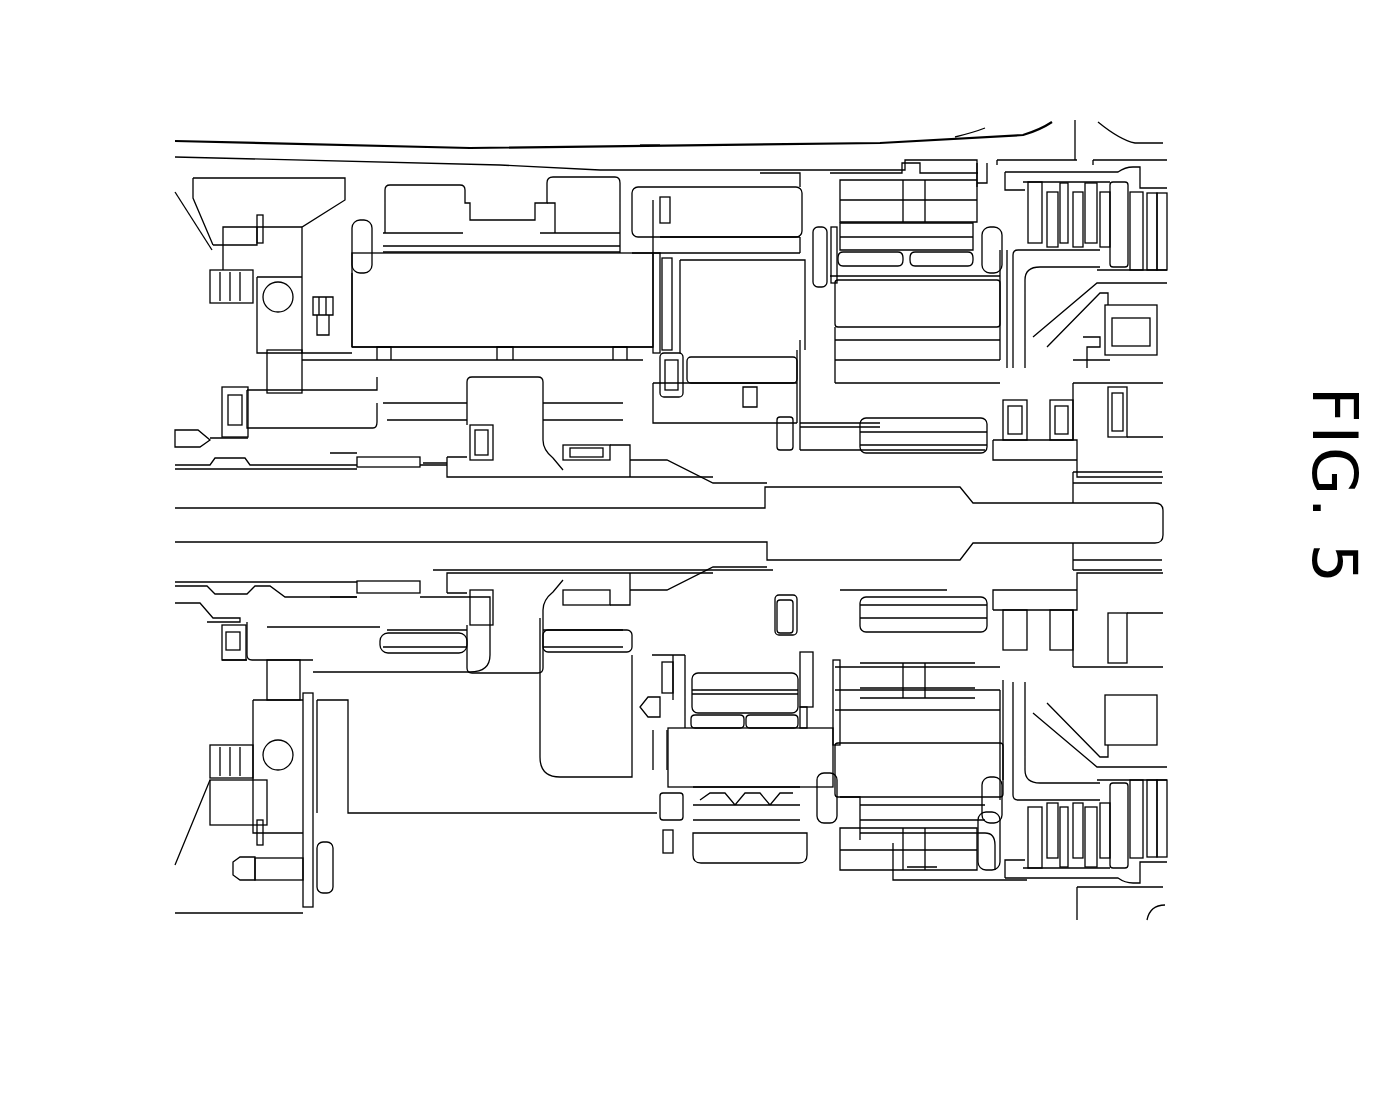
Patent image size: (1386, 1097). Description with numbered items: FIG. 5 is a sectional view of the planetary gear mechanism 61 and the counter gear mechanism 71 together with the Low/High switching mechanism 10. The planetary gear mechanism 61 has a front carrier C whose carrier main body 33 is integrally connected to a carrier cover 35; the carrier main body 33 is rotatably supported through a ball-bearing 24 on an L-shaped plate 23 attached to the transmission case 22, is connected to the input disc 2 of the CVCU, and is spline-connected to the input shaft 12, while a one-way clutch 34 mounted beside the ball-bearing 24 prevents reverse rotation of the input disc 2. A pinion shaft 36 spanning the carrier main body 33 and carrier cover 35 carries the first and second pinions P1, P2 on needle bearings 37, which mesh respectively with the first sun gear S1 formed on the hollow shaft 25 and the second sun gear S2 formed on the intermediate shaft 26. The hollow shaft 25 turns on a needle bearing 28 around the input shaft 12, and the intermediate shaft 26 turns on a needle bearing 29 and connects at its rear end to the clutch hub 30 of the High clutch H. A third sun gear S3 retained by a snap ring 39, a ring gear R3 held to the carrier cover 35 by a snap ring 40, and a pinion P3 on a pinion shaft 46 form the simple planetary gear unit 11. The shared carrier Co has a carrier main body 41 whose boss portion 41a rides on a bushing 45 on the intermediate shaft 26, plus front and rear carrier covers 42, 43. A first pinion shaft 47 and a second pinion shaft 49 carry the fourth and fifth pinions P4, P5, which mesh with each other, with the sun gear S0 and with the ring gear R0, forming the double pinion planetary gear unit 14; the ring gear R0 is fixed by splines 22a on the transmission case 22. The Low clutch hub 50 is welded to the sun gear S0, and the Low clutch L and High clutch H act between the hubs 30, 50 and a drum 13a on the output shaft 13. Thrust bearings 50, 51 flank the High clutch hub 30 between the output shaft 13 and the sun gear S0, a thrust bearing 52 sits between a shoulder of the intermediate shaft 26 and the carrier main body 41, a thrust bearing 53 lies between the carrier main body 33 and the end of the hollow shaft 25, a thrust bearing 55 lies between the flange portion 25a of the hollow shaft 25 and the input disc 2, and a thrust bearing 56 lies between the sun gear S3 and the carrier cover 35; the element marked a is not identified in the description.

The input disc 2 is at (173, 222).
The Low/High switching mechanism 10 is at (1175, 158).
The simple planetary gear unit 11 is at (730, 183).
The input shaft 12 is at (188, 483).
The output shaft 13 is at (1153, 455).
The drum 13a is at (1120, 177).
The double pinion planetary gear unit 14 is at (893, 170).
The transmission case 22 is at (262, 140).
The splines 22a is at (972, 880).
The L-shaped plate 23 is at (235, 190).
The ball-bearing 24 is at (270, 300).
The hollow shaft 25 is at (185, 440).
The flange portion 25a is at (255, 385).
The intermediate shaft 26 is at (1150, 492).
The needle bearing 28 is at (385, 465).
The needle bearing 29 is at (590, 452).
The clutch hub 30 is at (1110, 335).
The carrier main body 33 is at (425, 795).
The one-way clutch 34 is at (210, 280).
The carrier cover 35 is at (660, 470).
The pinion shaft 36 is at (510, 268).
The needle bearings 37 is at (460, 348).
The snap ring 39 is at (757, 385).
The snap ring 40 is at (668, 853).
The carrier main body 41 is at (846, 215).
The boss portion 41a is at (897, 433).
The front carrier cover 42 is at (673, 805).
The rear carrier cover 43 is at (1003, 780).
The bushing 45 is at (947, 590).
The pinion shaft 46 is at (673, 740).
The first pinion shaft 47 is at (940, 285).
The second pinion shaft 49 is at (935, 767).
The Low clutch hub 50 is at (1017, 288).
The thrust bearing 51 is at (1015, 428).
The thrust bearing 52 is at (790, 442).
The thrust bearing 53 is at (480, 453).
The thrust bearing 55 is at (225, 405).
The thrust bearing 56 is at (665, 358).
The planetary gear mechanism 61 is at (655, 125).
The counter gear mechanism 71 is at (960, 118).
The front carrier C is at (365, 197).
The carrier Co is at (817, 228).
The High clutch H is at (1158, 232).
The Low clutch L is at (1072, 200).
The first pinion P1 is at (425, 185).
The second pinion P2 is at (590, 185).
The pinion P3 is at (770, 813).
The fourth pinion P4 is at (885, 222).
The fifth pinion P5 is at (875, 815).
The ring gear R0 is at (848, 843).
The ring gear R3 is at (733, 858).
The sun gear S0 is at (905, 368).
The first sun gear S1 is at (433, 645).
The second sun gear S2 is at (580, 640).
The third sun gear S3 is at (705, 365).
The bearing a is at (782, 592).